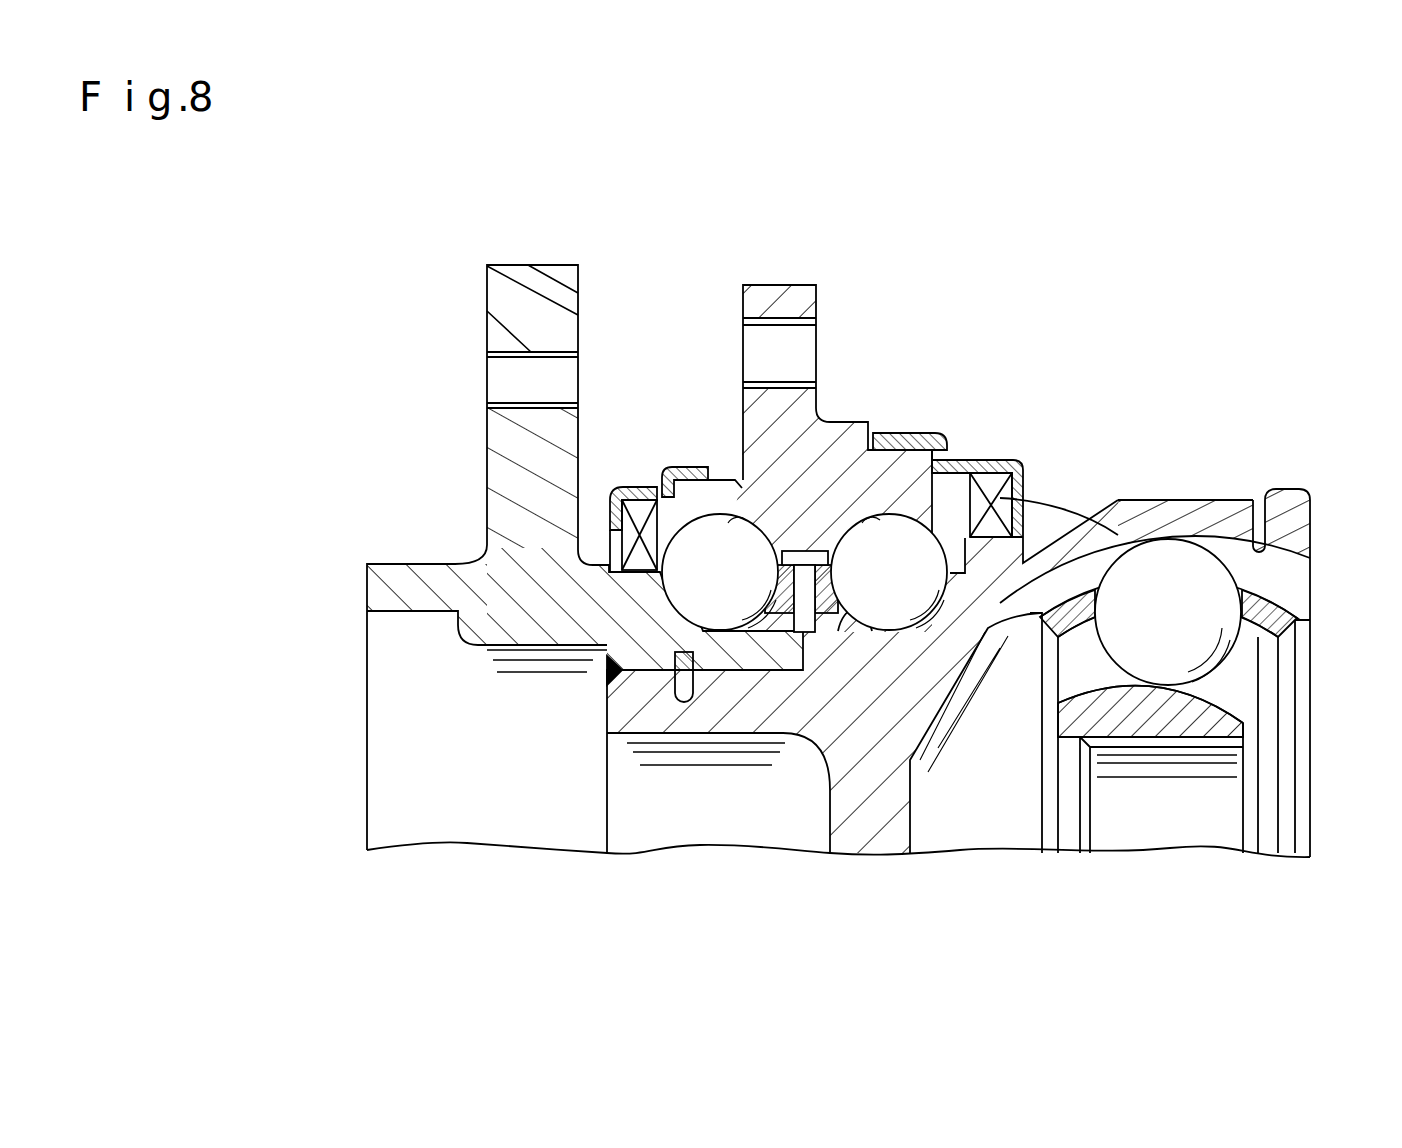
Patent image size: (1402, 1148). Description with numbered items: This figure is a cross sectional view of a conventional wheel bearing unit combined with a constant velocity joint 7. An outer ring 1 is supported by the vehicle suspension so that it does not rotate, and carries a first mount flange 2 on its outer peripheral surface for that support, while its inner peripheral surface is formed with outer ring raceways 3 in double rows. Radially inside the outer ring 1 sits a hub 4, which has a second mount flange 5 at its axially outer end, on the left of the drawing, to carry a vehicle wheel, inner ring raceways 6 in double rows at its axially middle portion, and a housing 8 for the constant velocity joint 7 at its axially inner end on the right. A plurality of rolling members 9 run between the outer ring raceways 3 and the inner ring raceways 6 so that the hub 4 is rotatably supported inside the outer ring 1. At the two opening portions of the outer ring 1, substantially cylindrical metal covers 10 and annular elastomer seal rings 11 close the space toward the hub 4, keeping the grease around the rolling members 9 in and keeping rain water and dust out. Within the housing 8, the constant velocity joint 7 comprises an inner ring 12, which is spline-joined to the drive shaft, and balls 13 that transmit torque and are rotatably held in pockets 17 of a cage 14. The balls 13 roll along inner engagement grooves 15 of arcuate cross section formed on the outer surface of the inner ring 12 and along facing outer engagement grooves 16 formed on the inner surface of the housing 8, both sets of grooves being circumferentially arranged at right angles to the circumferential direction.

The outer ring 1 is at (833, 432).
The first mount flange 2 is at (778, 298).
The outer ring raceways 3 is at (737, 527).
The hub 4 is at (498, 465).
The second mount flange 5 is at (498, 312).
The inner ring raceways 6 is at (850, 610).
The constant velocity joint 7 is at (1197, 826).
The housing 8 is at (1185, 510).
The rolling members 9 is at (690, 537).
The covers 10 is at (705, 470).
The seal rings 11 is at (636, 495).
The inner ring 12 is at (1207, 730).
The balls 13 is at (1215, 582).
The cage 14 is at (1290, 622).
The inner engagement grooves 15 is at (1217, 697).
The outer engagement grooves 16 is at (1259, 545).
The pockets 17 is at (1233, 627).